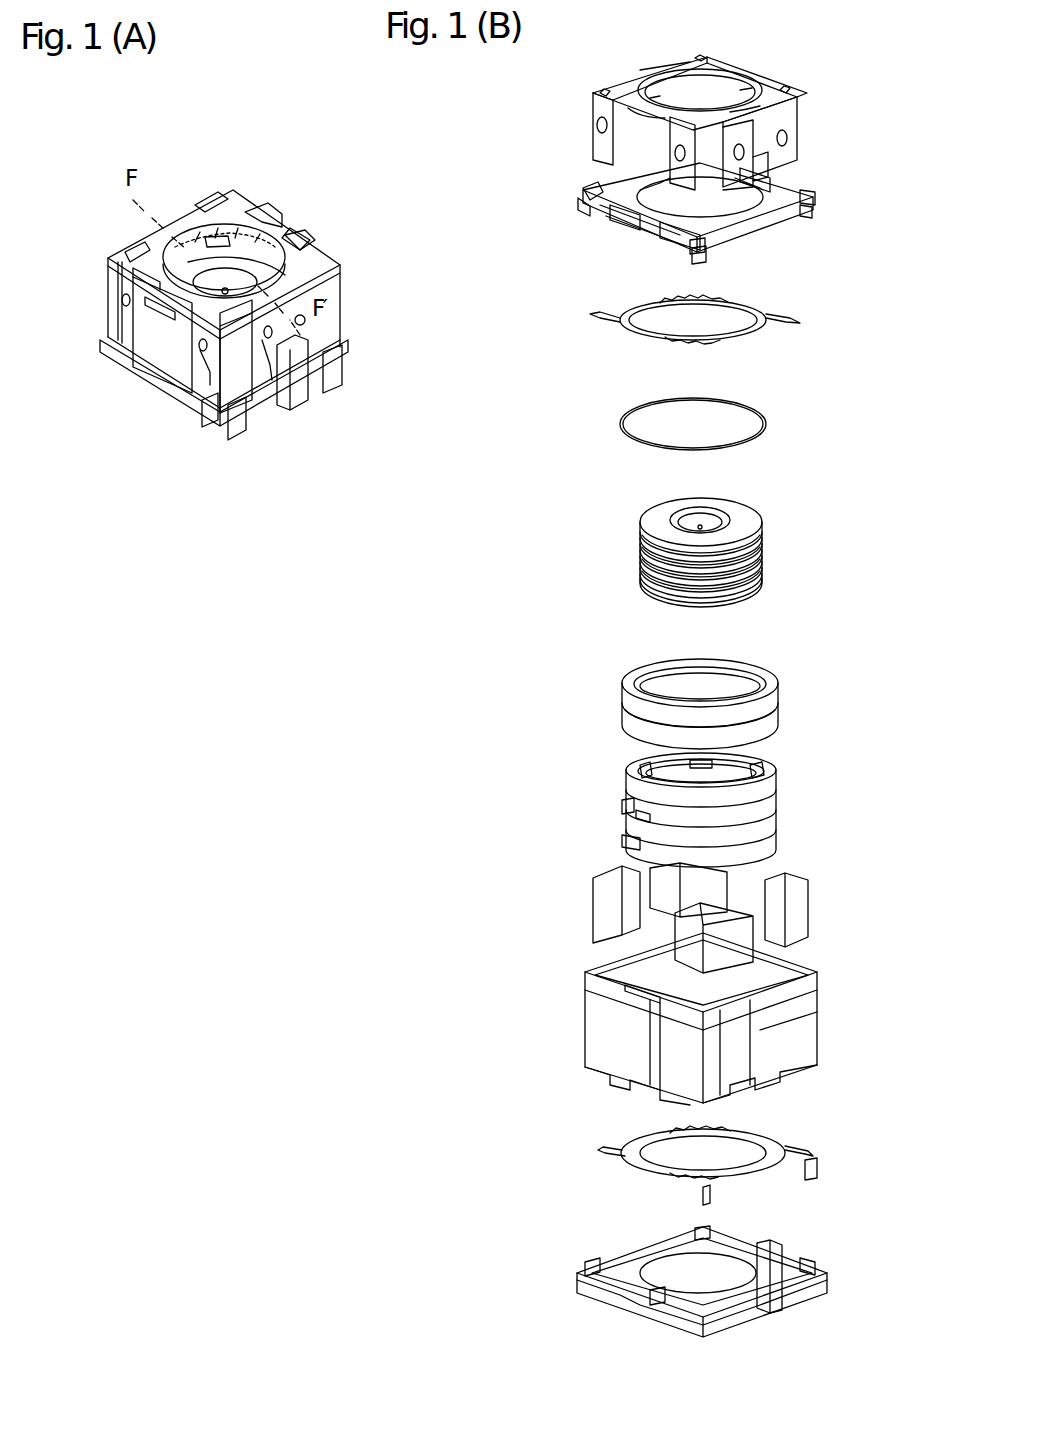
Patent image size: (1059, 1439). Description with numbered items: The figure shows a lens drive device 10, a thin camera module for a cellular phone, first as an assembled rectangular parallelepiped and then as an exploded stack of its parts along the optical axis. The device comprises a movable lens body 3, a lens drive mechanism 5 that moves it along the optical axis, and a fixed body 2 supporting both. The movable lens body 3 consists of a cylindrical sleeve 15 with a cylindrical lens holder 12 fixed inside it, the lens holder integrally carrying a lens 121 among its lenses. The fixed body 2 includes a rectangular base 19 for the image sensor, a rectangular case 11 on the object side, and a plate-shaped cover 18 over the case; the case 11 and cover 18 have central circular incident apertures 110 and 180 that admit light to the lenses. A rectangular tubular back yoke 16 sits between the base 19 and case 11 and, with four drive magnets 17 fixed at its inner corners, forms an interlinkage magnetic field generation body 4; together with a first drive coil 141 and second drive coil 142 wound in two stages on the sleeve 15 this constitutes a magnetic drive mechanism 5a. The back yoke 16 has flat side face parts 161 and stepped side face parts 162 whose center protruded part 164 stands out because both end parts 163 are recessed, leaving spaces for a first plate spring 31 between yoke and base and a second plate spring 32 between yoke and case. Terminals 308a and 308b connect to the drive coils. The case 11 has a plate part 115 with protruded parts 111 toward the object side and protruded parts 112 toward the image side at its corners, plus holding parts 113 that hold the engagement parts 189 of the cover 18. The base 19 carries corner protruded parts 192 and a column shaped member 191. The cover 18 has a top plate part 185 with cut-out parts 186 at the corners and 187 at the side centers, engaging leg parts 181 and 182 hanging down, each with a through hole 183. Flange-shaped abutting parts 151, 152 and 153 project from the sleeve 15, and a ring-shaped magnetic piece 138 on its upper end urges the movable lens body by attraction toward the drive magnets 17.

In FIG. 1A, the lens drive device 10 is at (318, 152).
In FIG. 1A, the fixed body 2 is at (36, 215).
In FIG. 1A, the movable lens body 3 is at (297, 240).
In FIG. 1B, the movable lens body 3 is at (757, 681).
In FIG. 1B, the interlinkage magnetic field generation body 4 is at (671, 967).
In FIG. 1B, the lens drive mechanism 5 is at (632, 810).
In FIG. 1B, the magnetic drive mechanism 5a is at (626, 777).
In FIG. 1A, the case 11 is at (112, 256).
In FIG. 1B, the case 11 is at (723, 221).
In FIG. 1A, the lens holder 12 is at (160, 222).
In FIG. 1B, the lens holder 12 is at (754, 548).
In FIG. 1B, the sleeve 15 is at (662, 799).
In FIG. 1A, the back yoke 16 is at (237, 382).
In FIG. 1B, the back yoke 16 is at (669, 1019).
In FIG. 1B, the drive magnets 17 is at (715, 875).
In FIG. 1A, the plate-shaped cover 18 is at (130, 245).
In FIG. 1B, the plate-shaped cover 18 is at (696, 113).
In FIG. 1A, the base 19 is at (234, 404).
In FIG. 1B, the base 19 is at (703, 1263).
In FIG. 1B, the first plate spring 31 is at (752, 1162).
In FIG. 1B, the second plate spring 32 is at (782, 316).
In FIG. 1A, the incident aperture 110 is at (252, 189).
In FIG. 1B, the incident aperture 110 is at (762, 215).
In FIG. 1A, the protruded parts 111 is at (302, 188).
In FIG. 1B, the protruded parts 111 is at (802, 204).
In FIG. 1B, the protruded parts 112 is at (800, 224).
In FIG. 1A, the holding parts 113 is at (298, 240).
In FIG. 1B, the holding parts 113 is at (772, 178).
In FIG. 1B, the plate part 115 is at (690, 240).
In FIG. 1A, the lens 121 is at (185, 255).
In FIG. 1B, the lens 121 is at (725, 515).
In FIG. 1B, the magnetic piece 138 is at (767, 420).
In FIG. 1B, the first drive coil 141 is at (745, 726).
In FIG. 1B, the second drive coil 142 is at (772, 700).
In FIG. 1B, the abutting part 151 is at (770, 765).
In FIG. 1B, the abutting part 152 is at (628, 816).
In FIG. 1B, the abutting part 153 is at (625, 840).
In FIG. 1A, the side face parts 161 is at (237, 382).
In FIG. 1B, the side face parts 161 is at (810, 1035).
In FIG. 1A, the side face parts 162 is at (237, 382).
In FIG. 1B, the side face parts 162 is at (632, 1040).
In FIG. 1A, the end parts 163 is at (237, 382).
In FIG. 1B, the end parts 163 is at (632, 1040).
In FIG. 1A, the protruded part 164 is at (338, 322).
In FIG. 1B, the protruded part 164 is at (700, 1035).
In FIG. 1A, the incident aperture 180 is at (230, 235).
In FIG. 1B, the incident aperture 180 is at (770, 68).
In FIG. 1B, the engaging leg parts 181 is at (782, 120).
In FIG. 1A, the engaging leg parts 182 is at (184, 412).
In FIG. 1B, the engaging leg parts 182 is at (600, 108).
In FIG. 1A, the through hole 183 is at (126, 338).
In FIG. 1B, the through hole 183 is at (597, 127).
In FIG. 1B, the top plate part 185 is at (628, 82).
In FIG. 1A, the cut-out parts 186 is at (213, 193).
In FIG. 1B, the cut-out parts 186 is at (594, 86).
In FIG. 1B, the cut-out parts 187 is at (648, 114).
In FIG. 1B, the engagement parts 189 is at (750, 73).
In FIG. 1A, the column shaped member 191 is at (234, 404).
In FIG. 1B, the column shaped member 191 is at (780, 1300).
In FIG. 1B, the protruded parts 192 is at (700, 1235).
In FIG. 1A, the terminal 308a is at (234, 404).
In FIG. 1B, the terminal 308a is at (822, 1168).
In FIG. 1A, the terminal 308b is at (110, 338).
In FIG. 1B, the terminal 308b is at (712, 1197).